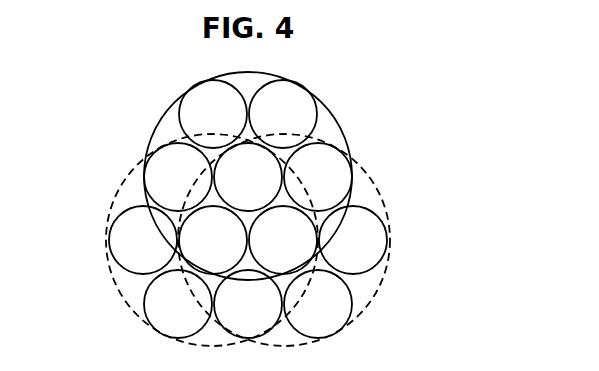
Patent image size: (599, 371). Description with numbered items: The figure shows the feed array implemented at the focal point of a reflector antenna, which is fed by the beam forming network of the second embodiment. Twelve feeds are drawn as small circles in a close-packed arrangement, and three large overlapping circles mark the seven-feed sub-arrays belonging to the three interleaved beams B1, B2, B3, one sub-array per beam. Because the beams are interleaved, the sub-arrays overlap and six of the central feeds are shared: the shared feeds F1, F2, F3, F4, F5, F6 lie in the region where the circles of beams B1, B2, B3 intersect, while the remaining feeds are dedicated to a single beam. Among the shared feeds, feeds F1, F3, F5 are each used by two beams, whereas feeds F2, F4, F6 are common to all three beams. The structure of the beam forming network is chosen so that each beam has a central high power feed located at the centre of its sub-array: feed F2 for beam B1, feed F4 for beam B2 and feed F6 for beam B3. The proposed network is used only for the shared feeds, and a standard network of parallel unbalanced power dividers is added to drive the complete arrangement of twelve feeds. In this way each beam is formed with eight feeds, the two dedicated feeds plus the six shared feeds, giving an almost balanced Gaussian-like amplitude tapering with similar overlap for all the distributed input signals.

The beam B1 is at (125, 181).
The beam B2 is at (340, 120).
The beam B3 is at (373, 185).
The shared feed F1 is at (248, 304).
The shared feed F2 is at (213, 240).
The shared feed F3 is at (178, 177).
The shared feed F4 is at (248, 177).
The shared feed F5 is at (318, 177).
The shared feed F6 is at (283, 240).